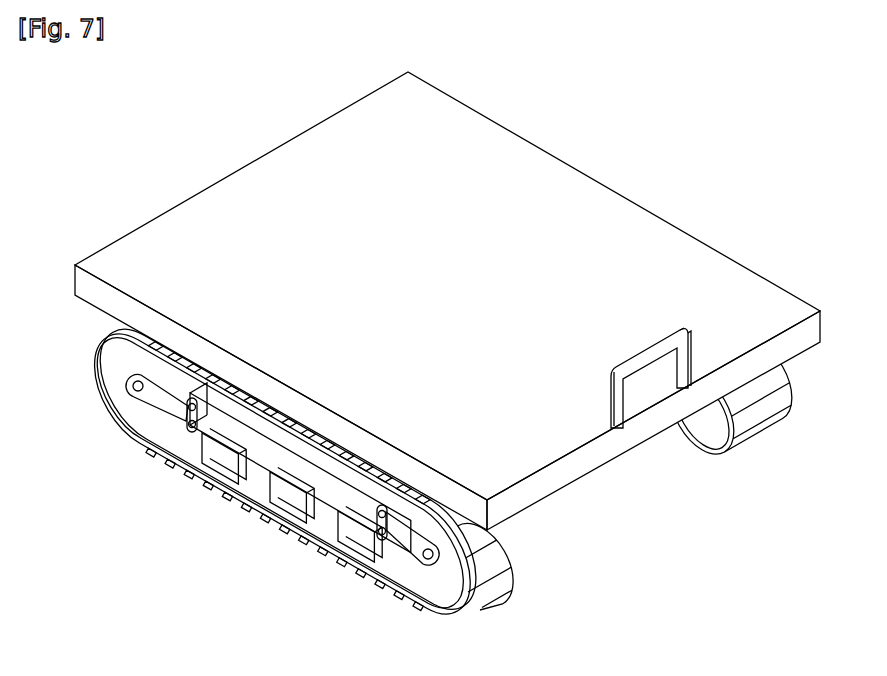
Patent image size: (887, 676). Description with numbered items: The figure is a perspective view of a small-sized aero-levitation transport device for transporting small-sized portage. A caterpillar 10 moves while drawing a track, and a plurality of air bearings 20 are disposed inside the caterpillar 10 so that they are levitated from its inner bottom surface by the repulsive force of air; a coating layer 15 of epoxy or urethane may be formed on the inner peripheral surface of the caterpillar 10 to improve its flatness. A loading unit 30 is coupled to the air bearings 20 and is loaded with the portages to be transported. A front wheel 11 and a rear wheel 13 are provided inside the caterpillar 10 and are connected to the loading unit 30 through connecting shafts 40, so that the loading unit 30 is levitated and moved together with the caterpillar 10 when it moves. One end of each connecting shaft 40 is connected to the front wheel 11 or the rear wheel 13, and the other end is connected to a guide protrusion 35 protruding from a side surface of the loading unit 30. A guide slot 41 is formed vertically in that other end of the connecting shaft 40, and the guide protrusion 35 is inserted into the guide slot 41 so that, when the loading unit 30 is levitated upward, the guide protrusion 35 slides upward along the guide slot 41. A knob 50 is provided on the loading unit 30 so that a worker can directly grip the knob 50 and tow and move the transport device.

The caterpillar 10 is at (513, 572).
The front wheel 11 is at (432, 575).
The rear wheel 13 is at (105, 392).
The coating layer 15 is at (193, 441).
The air bearing 20 is at (305, 535).
The loading unit 30 is at (653, 228).
The guide protrusion 35 is at (182, 422).
The connecting shaft 40 is at (133, 436).
The guide slot 41 is at (352, 565).
The knob 50 is at (645, 355).